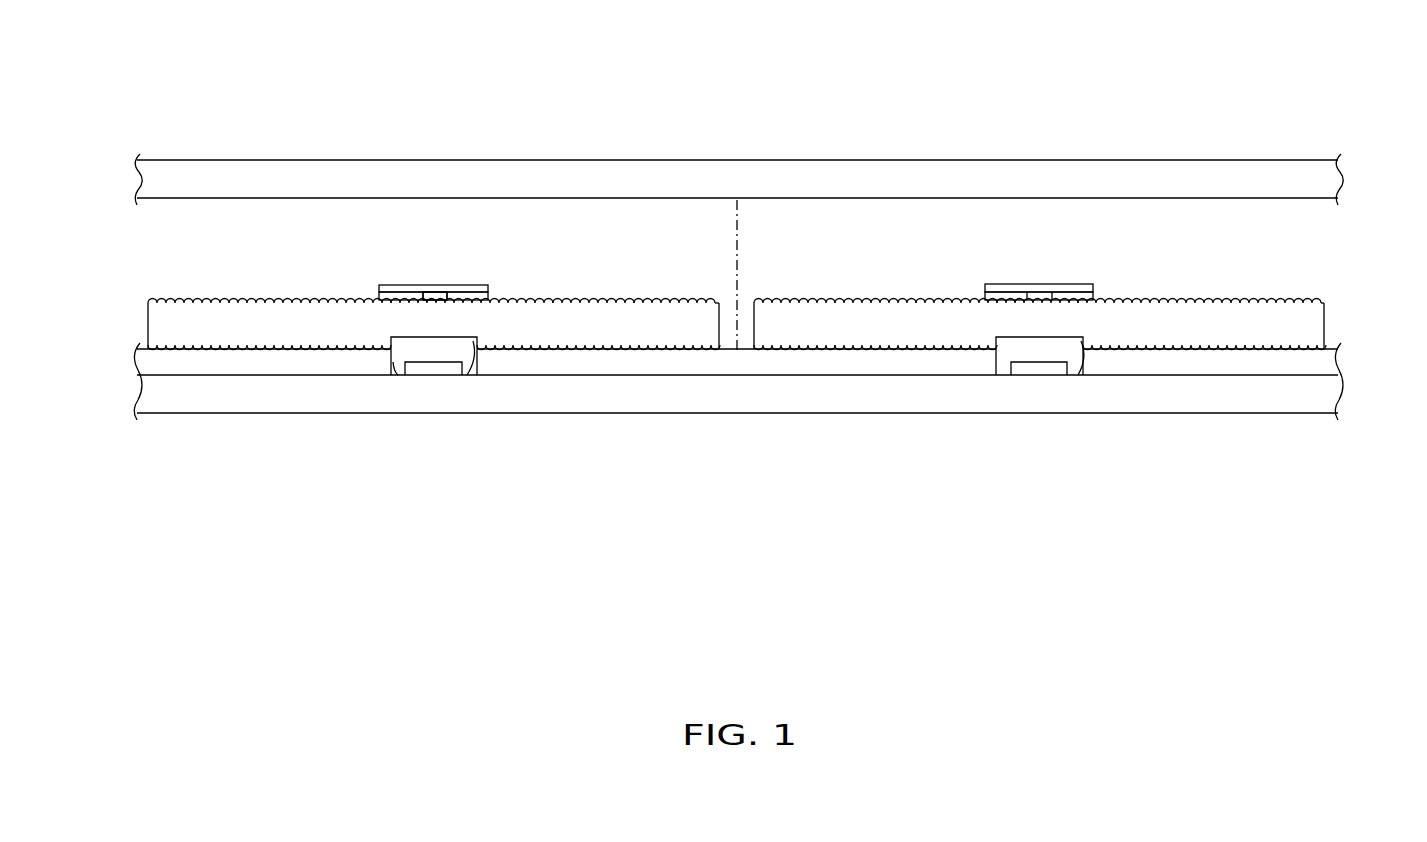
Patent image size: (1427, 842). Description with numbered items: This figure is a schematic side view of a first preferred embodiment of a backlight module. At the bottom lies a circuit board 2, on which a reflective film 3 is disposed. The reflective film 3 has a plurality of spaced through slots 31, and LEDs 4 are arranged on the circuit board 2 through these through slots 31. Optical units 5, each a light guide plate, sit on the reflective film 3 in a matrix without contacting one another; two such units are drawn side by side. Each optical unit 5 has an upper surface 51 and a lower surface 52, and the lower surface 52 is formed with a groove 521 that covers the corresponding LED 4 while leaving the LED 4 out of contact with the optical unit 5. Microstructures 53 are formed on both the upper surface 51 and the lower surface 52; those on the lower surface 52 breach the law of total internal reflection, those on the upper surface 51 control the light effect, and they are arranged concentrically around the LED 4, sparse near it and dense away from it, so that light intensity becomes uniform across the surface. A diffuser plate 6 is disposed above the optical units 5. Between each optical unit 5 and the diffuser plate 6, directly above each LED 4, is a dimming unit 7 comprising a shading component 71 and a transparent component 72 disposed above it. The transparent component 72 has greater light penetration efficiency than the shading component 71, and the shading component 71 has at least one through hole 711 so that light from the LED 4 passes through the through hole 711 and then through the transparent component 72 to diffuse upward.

The circuit board 2 is at (163, 408).
The reflective film 3 is at (693, 402).
The through slot 31 is at (397, 372).
The LED 4 is at (438, 372).
The optical unit 5 is at (734, 340).
The upper surface 51 is at (538, 302).
The lower surface 52 is at (737, 404).
The groove 521 is at (470, 393).
The microstructures 53 is at (737, 340).
The diffuser plate 6 is at (158, 163).
The dimming unit 7 is at (665, 253).
The shading component 71 is at (686, 257).
The through hole 711 is at (447, 295).
The transparent component 72 is at (393, 287).